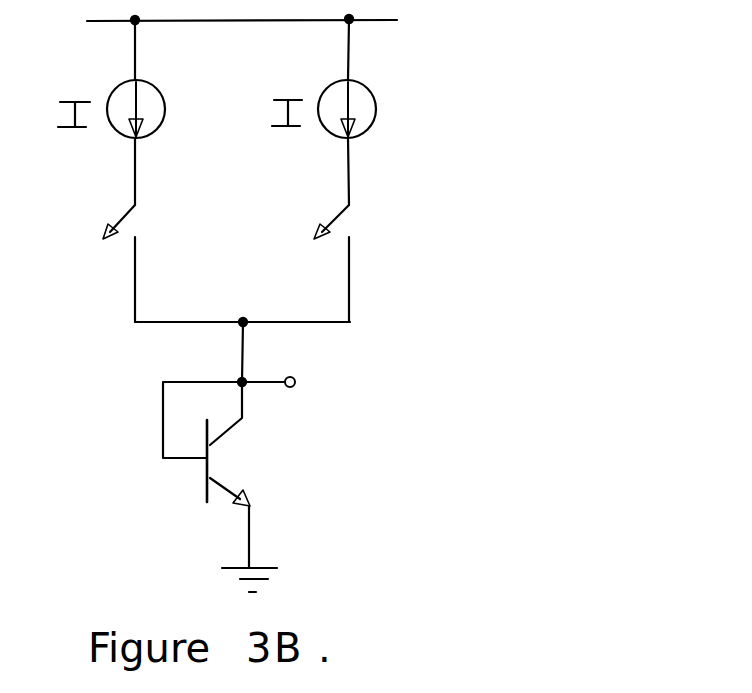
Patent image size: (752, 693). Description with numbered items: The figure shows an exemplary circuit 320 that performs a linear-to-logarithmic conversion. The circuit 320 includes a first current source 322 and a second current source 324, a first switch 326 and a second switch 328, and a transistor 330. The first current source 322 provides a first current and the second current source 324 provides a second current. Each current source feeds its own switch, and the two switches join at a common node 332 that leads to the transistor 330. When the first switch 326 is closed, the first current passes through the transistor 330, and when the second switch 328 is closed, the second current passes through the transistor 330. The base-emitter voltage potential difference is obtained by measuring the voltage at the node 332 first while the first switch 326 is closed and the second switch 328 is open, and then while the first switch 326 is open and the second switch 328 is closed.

The circuit 320 is at (557, 320).
The current source 322 is at (165, 85).
The current source 324 is at (380, 98).
The switch 326 is at (143, 218).
The switch 328 is at (365, 216).
The transistor 330 is at (242, 455).
The node 332 is at (247, 373).